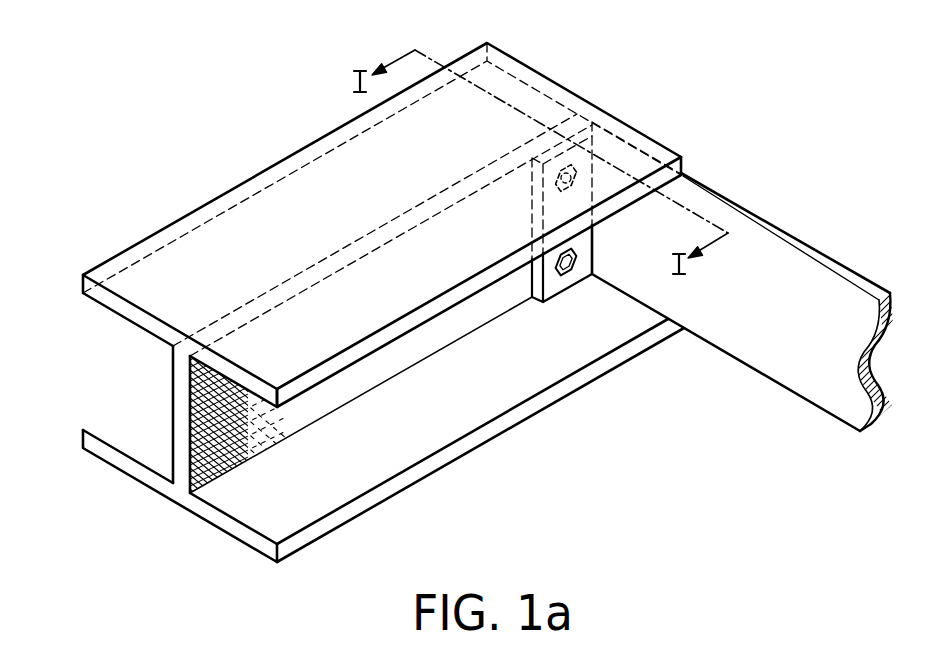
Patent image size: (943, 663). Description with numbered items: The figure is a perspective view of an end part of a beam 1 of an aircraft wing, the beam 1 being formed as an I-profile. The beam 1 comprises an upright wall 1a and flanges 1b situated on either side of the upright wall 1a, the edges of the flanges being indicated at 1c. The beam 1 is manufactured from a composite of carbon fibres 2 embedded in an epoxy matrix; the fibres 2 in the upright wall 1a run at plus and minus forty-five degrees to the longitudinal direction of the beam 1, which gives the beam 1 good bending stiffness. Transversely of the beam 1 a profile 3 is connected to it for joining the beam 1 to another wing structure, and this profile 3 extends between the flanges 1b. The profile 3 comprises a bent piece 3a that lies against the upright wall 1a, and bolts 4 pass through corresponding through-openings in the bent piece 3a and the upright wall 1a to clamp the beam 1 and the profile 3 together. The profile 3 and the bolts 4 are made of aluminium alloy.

The beam 1 is at (134, 164).
The upright wall 1a is at (174, 430).
The flanges 1b is at (128, 283).
The flange edges 1c is at (268, 367).
The carbon fibres 2 is at (240, 423).
The profile 3 is at (795, 248).
The bent piece 3a is at (555, 287).
The bolts 4 is at (577, 180).